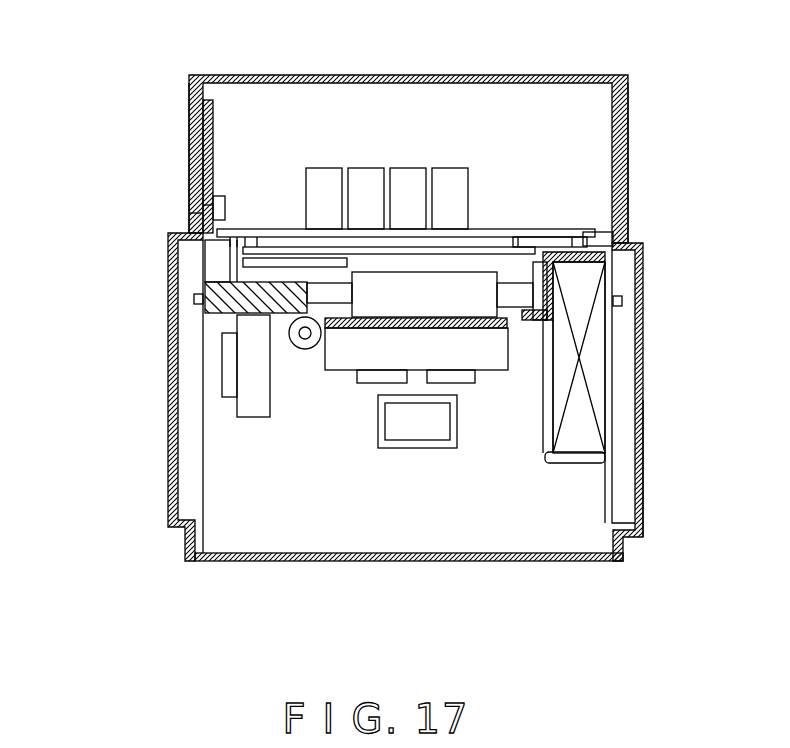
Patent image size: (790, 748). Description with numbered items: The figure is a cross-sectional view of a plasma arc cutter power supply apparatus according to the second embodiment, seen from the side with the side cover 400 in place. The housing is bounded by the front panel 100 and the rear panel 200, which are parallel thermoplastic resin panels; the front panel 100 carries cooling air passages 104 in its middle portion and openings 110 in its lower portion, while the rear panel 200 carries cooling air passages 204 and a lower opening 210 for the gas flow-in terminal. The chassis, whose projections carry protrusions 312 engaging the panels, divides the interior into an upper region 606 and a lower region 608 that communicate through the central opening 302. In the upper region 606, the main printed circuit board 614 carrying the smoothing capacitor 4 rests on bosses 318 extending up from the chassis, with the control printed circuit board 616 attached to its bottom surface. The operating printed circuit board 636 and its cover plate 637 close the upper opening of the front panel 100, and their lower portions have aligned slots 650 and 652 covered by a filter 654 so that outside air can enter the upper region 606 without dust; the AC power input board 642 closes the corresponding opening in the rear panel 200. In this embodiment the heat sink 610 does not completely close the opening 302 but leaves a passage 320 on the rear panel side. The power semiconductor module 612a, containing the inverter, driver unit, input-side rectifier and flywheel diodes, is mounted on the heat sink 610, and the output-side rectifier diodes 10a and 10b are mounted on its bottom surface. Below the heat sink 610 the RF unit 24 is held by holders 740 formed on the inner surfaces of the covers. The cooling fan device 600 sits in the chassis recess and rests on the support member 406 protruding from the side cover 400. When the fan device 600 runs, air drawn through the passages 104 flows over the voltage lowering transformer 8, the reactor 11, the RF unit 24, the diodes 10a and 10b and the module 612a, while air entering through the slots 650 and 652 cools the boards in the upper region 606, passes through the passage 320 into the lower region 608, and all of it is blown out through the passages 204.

The side cover 400 is at (481, 66).
The operating printed circuit board 636 is at (213, 112).
The cover plate 637 is at (188, 146).
The slot 652 is at (212, 213).
The slot 650 is at (198, 212).
The power semiconductor module 612a is at (372, 292).
The filter 654 is at (225, 210).
The smoothing capacitor 4 is at (368, 186).
The upper region 606 is at (545, 140).
The control printed circuit board 616 is at (480, 252).
The main printed circuit board 614 is at (548, 232).
The AC power input board 642 is at (620, 138).
The boss 318 is at (237, 266).
The protrusion 312 is at (194, 298).
The central opening 302 is at (331, 330).
The cooling air passage 104 is at (172, 420).
The cooling air passage 204 is at (640, 385).
The rear panel 200 is at (662, 420).
The front panel 100 is at (117, 477).
The opening 110 is at (176, 494).
The reactor 11 is at (300, 352).
The voltage lowering transformer 8 is at (253, 417).
The diode 10a is at (376, 368).
The RF unit 24 is at (412, 428).
The lower region 608 is at (350, 535).
The holder 740 is at (425, 445).
The diode 10b is at (460, 368).
The heat sink 610 is at (485, 356).
The passage 320 is at (512, 350).
The support member 406 is at (588, 466).
The opening 210 is at (636, 497).
The cooling fan device 600 is at (580, 435).